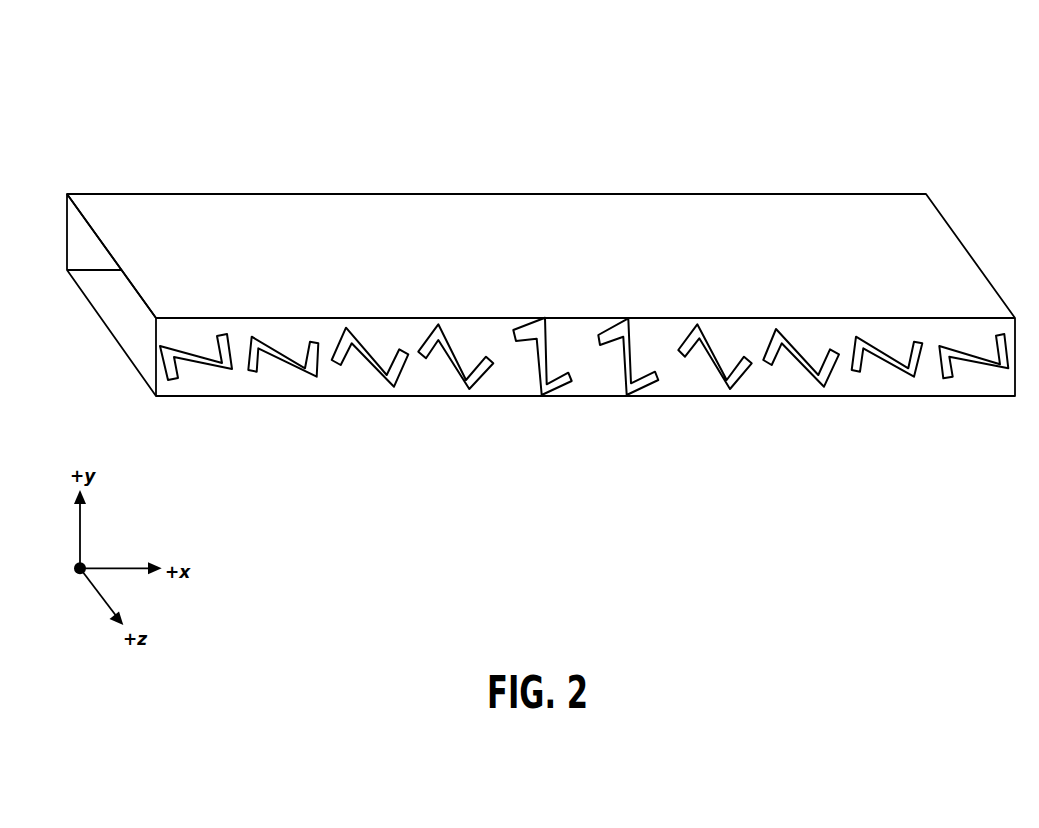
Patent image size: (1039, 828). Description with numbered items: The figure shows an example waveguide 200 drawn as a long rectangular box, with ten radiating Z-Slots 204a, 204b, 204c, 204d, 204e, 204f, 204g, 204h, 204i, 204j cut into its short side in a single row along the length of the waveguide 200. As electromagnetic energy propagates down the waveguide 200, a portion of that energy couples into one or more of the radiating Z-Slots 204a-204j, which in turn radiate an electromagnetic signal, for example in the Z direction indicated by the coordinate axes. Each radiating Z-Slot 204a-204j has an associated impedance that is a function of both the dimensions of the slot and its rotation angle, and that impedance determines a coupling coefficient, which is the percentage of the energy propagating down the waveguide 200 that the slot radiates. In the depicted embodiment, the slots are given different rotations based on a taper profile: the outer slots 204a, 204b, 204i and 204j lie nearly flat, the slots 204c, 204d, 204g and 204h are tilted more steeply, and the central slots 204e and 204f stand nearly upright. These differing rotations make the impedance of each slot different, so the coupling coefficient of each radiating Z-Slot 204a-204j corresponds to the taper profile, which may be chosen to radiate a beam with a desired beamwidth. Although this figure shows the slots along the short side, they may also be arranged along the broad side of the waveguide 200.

The waveguide 200 is at (155, 123).
The radiating Z-Slot 204a is at (173, 380).
The radiating Z-Slot 204b is at (307, 377).
The radiating Z-Slot 204c is at (379, 385).
The radiating Z-Slot 204d is at (460, 380).
The radiating Z-Slot 204e is at (565, 383).
The radiating Z-Slot 204f is at (650, 383).
The radiating Z-Slot 204g is at (720, 380).
The radiating Z-Slot 204h is at (812, 375).
The radiating Z-Slot 204i is at (908, 377).
The radiating Z-Slot 204j is at (997, 368).